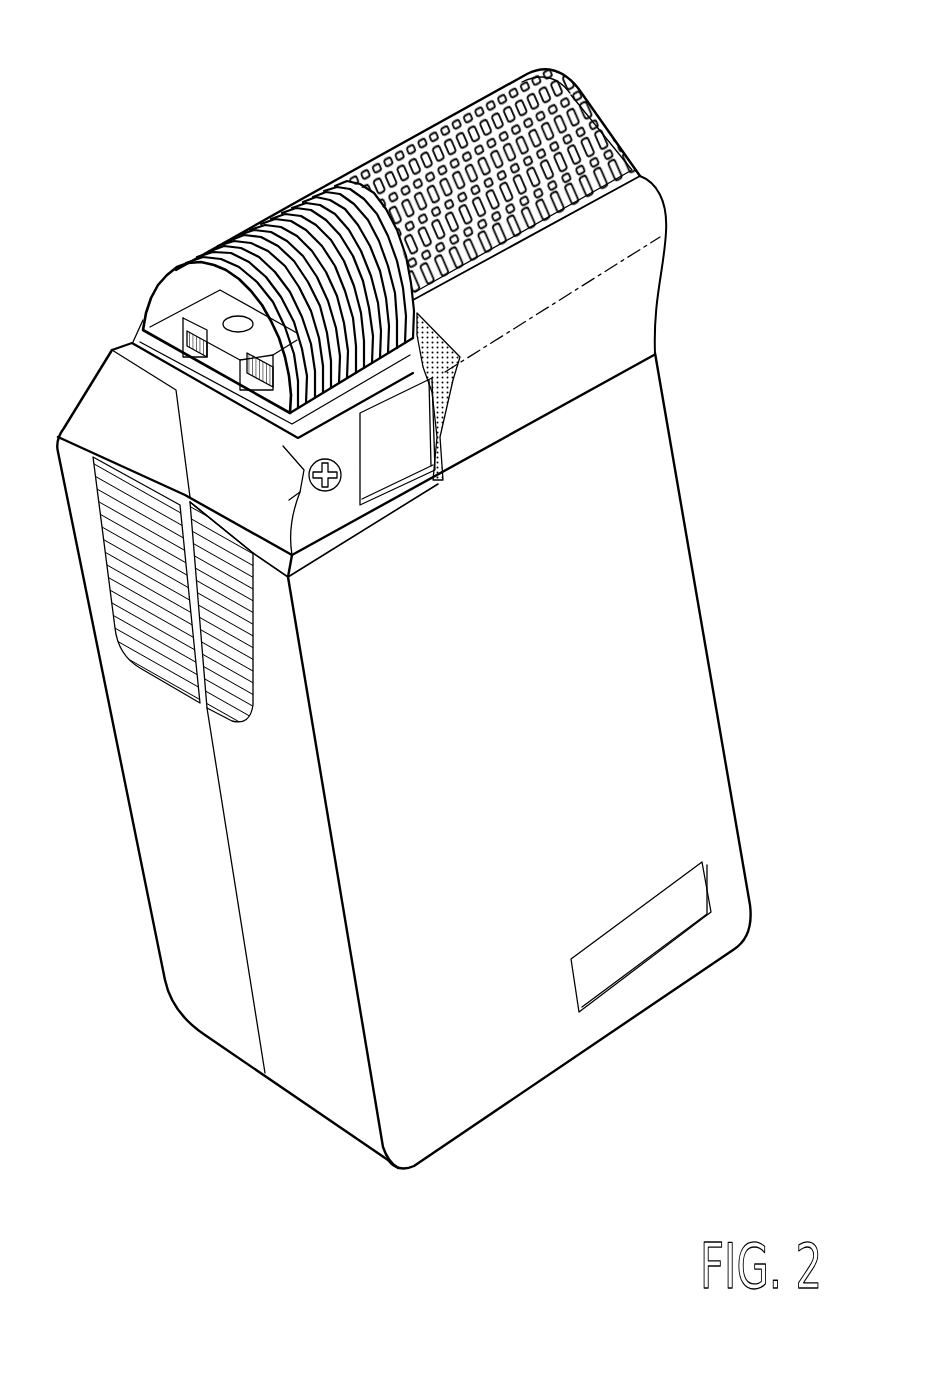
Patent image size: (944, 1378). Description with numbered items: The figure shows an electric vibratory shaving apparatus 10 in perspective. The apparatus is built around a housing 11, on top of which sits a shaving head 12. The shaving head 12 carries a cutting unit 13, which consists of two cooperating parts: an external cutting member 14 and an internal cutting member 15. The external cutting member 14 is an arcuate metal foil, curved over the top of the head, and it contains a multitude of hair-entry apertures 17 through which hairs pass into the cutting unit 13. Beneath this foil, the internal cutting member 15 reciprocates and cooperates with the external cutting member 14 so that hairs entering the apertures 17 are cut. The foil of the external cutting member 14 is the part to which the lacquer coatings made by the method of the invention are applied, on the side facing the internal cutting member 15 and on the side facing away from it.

The electric vibratory shaving apparatus 10 is at (805, 552).
The housing 11 is at (160, 819).
The shaving head 12 is at (637, 217).
The cutting unit 13 is at (310, 143).
The external cutting member 14 is at (447, 135).
The internal cutting member 15 is at (247, 228).
The hair-entry apertures 17 is at (460, 140).